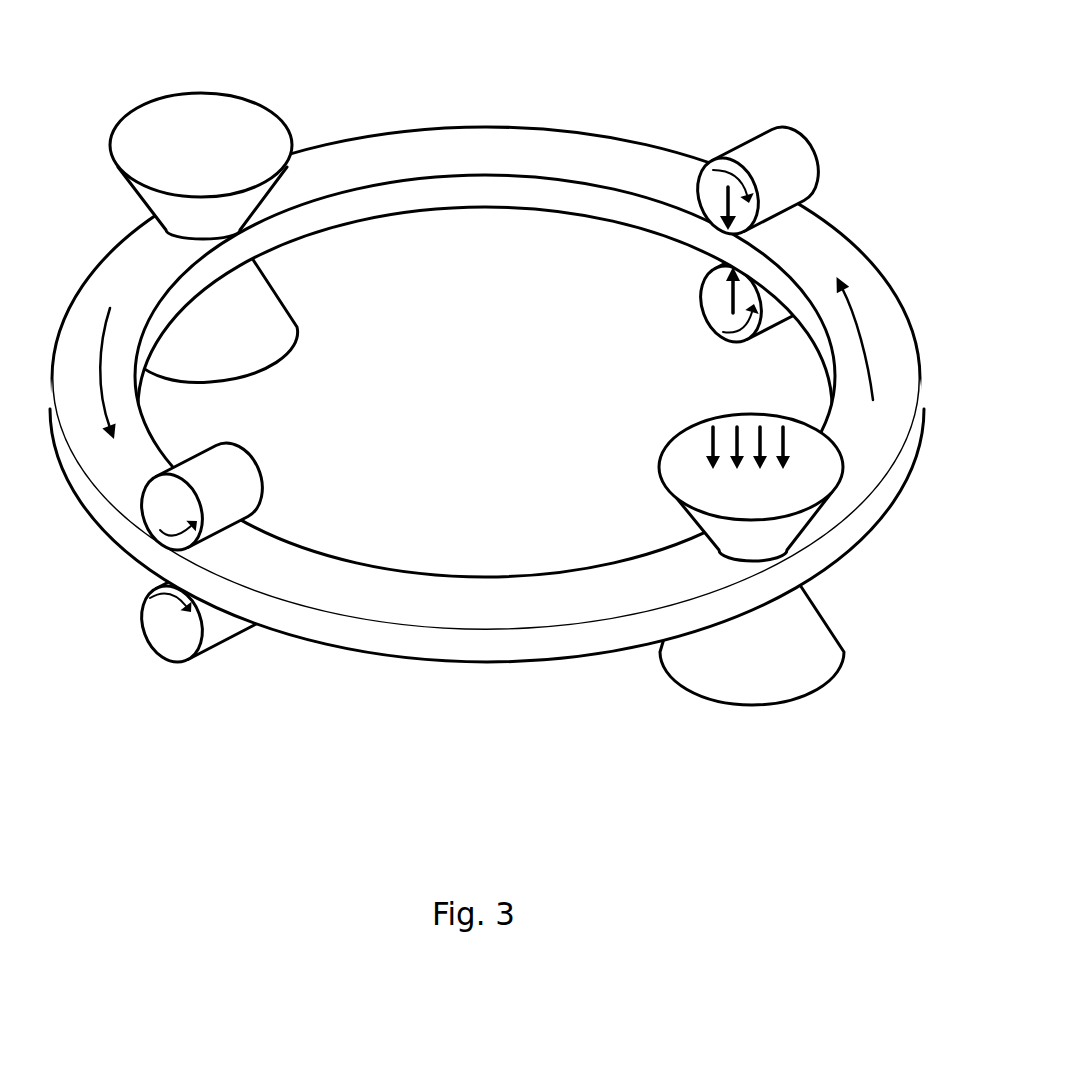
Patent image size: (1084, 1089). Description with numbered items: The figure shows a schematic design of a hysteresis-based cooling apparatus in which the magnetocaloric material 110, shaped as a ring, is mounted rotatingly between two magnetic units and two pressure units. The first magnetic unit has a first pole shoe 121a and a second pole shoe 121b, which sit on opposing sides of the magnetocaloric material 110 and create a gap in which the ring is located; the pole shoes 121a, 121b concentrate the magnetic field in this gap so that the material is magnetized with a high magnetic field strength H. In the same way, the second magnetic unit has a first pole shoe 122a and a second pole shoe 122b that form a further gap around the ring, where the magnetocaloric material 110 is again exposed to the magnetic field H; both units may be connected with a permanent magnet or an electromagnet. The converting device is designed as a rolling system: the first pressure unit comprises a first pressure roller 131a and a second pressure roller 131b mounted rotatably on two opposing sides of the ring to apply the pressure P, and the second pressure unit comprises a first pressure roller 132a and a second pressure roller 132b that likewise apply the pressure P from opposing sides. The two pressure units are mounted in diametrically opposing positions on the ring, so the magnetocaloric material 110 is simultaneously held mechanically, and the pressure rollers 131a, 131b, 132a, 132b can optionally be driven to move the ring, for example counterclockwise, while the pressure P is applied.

The magnetocaloric material 110 is at (380, 610).
The first pole shoe 121a is at (693, 487).
The second pole shoe 121b is at (747, 655).
The first pole shoe 122a is at (200, 115).
The second pole shoe 122b is at (247, 293).
The first pressure roller 131a is at (772, 145).
The second pressure roller 131b is at (713, 282).
The first pressure roller 132a is at (217, 473).
The second pressure roller 132b is at (183, 640).
The pressure P is at (780, 190).
The magnetic field strength H is at (790, 452).